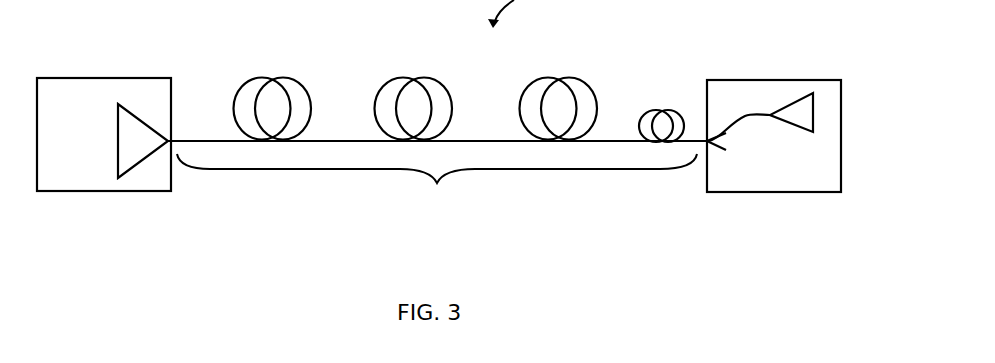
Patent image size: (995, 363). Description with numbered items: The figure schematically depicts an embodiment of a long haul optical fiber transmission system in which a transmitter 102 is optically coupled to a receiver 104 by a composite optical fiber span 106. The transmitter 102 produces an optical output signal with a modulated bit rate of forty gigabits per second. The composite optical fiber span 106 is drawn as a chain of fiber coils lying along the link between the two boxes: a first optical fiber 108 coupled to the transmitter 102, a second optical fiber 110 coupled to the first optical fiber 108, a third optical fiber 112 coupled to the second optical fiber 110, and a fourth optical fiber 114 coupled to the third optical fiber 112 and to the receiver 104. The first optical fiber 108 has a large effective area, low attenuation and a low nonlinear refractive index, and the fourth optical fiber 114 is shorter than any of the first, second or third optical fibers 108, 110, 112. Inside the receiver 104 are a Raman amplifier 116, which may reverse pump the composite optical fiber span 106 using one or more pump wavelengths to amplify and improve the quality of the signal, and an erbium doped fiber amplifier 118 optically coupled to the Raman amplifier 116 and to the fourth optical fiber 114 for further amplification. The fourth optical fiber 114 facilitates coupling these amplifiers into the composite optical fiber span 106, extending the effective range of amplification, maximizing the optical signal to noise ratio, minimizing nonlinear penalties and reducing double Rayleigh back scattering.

The transmitter 102 is at (87, 78).
The receiver 104 is at (733, 80).
The composite optical fiber span 106 is at (437, 187).
The first optical fiber 108 is at (272, 78).
The second optical fiber 110 is at (413, 78).
The third optical fiber 112 is at (558, 78).
The fourth optical fiber 114 is at (662, 110).
The Raman amplifier 116 is at (813, 93).
The erbium doped fiber amplifier 118 is at (757, 117).